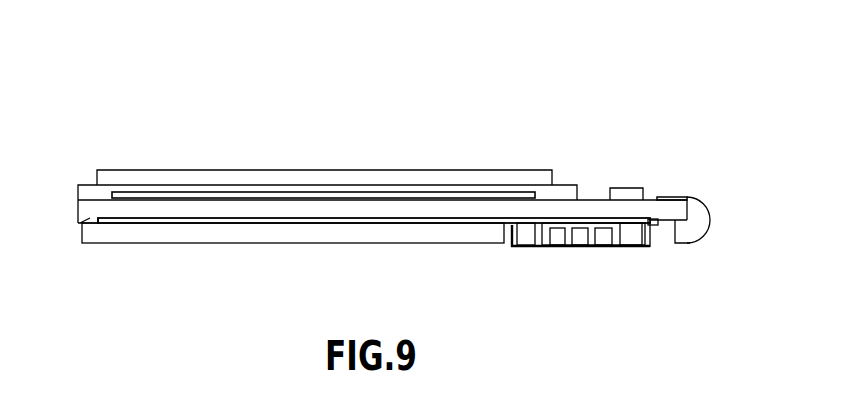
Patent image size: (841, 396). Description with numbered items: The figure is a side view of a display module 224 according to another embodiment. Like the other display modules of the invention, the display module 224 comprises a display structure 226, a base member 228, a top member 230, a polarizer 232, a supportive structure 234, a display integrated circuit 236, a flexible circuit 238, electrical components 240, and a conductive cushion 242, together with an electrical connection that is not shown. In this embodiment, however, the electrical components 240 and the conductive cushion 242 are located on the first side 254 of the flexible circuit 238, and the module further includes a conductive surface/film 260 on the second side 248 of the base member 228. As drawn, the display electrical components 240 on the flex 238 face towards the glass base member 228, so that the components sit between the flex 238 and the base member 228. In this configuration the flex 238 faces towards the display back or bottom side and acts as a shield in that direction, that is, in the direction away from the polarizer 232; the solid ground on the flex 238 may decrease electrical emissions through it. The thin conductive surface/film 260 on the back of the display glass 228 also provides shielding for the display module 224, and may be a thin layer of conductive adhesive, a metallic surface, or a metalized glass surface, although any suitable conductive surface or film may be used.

The display module 224 is at (142, 65).
The display structure 226 is at (518, 197).
The base member 228 is at (83, 207).
The top member 230 is at (78, 190).
The polarizer 232 is at (128, 170).
The supportive structure 234 is at (95, 232).
The display integrated circuit (IC) 236 is at (628, 190).
The flexible circuit 238 is at (713, 230).
The electrical components 240 is at (602, 232).
The conductive cushion 242 is at (629, 235).
The second side 248 is at (80, 222).
The first side 254 is at (685, 247).
The conductive surface/film 260 is at (455, 225).